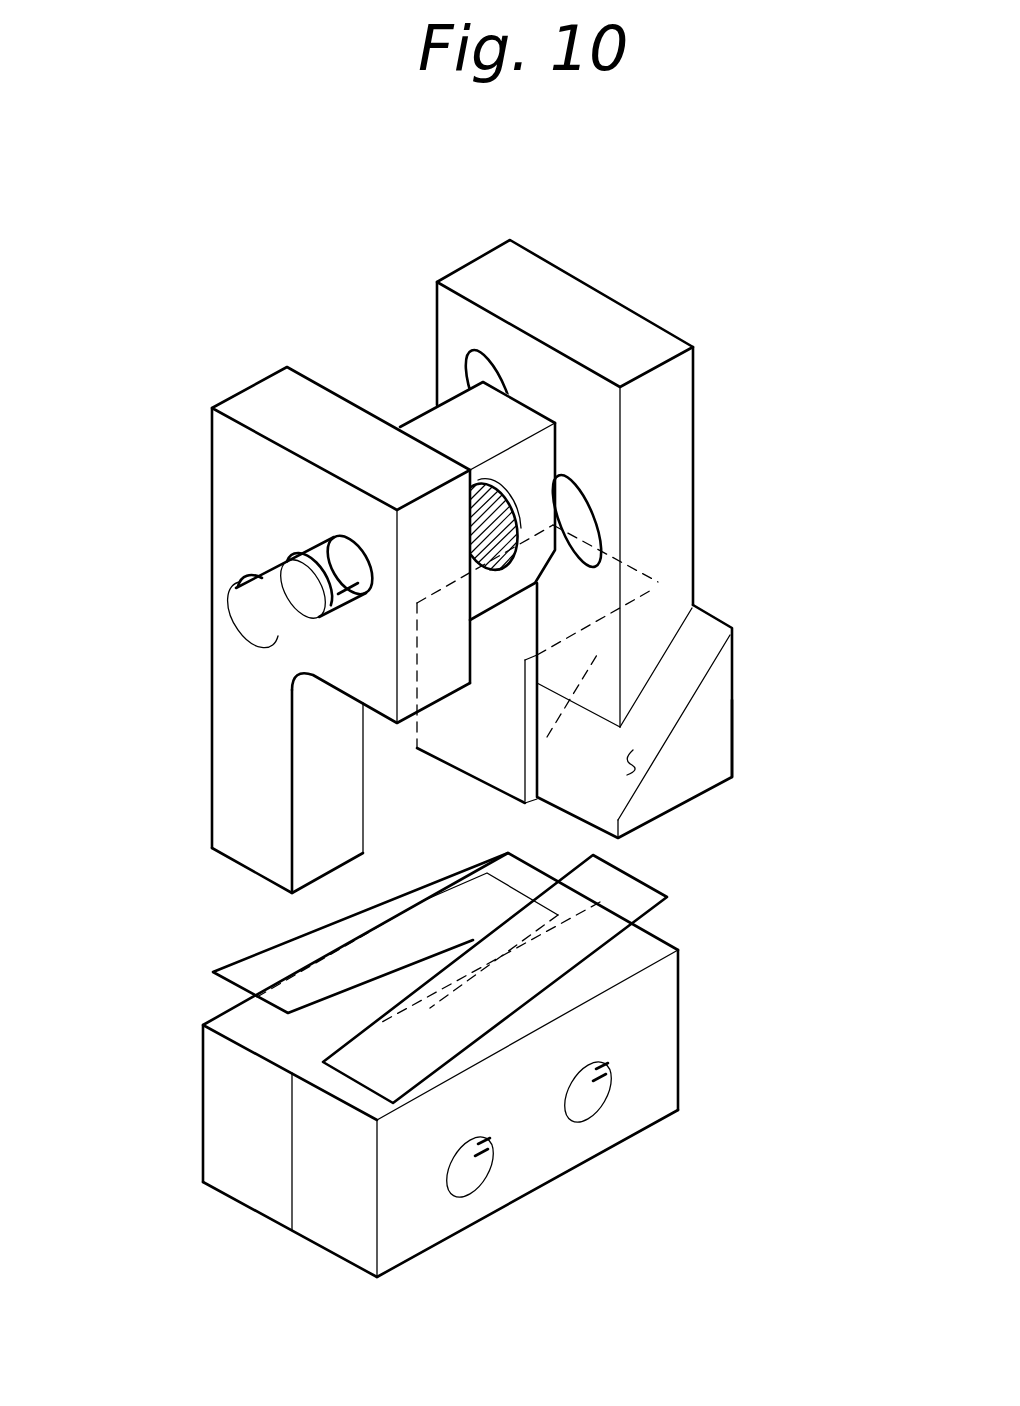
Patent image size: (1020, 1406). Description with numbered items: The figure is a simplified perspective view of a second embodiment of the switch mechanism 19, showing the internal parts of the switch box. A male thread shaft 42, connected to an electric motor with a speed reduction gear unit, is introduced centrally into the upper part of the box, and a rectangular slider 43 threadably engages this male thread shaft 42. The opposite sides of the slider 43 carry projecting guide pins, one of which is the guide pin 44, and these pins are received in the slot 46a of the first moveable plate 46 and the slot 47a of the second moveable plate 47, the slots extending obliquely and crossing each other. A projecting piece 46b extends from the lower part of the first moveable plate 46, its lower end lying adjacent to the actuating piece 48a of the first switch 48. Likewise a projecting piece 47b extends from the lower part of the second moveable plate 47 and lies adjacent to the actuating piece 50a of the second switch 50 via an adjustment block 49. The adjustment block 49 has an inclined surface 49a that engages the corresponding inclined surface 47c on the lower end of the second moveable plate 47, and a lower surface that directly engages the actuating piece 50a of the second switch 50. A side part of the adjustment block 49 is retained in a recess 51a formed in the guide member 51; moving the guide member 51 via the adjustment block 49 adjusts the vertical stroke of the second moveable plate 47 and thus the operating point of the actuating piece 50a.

The switch mechanism 19 is at (600, 258).
The male thread shaft 42 is at (517, 513).
The slider 43 is at (428, 418).
The guide pin 44 is at (322, 617).
The first moveable plate 46 is at (256, 392).
The slot 46a is at (235, 592).
The projecting piece 46b is at (213, 795).
The second moveable plate 47 is at (657, 323).
The slot 47a is at (463, 352).
The projecting piece 47b is at (672, 618).
The inclined surface 47c is at (667, 652).
The first switch 48 is at (245, 1188).
The actuating piece 48a is at (263, 963).
The adjustment block 49 is at (720, 758).
The inclined surface 49a is at (634, 772).
The second switch 50 is at (668, 1075).
The actuating piece 50a is at (650, 897).
The guide member 51 is at (650, 572).
The recess 51a is at (547, 724).